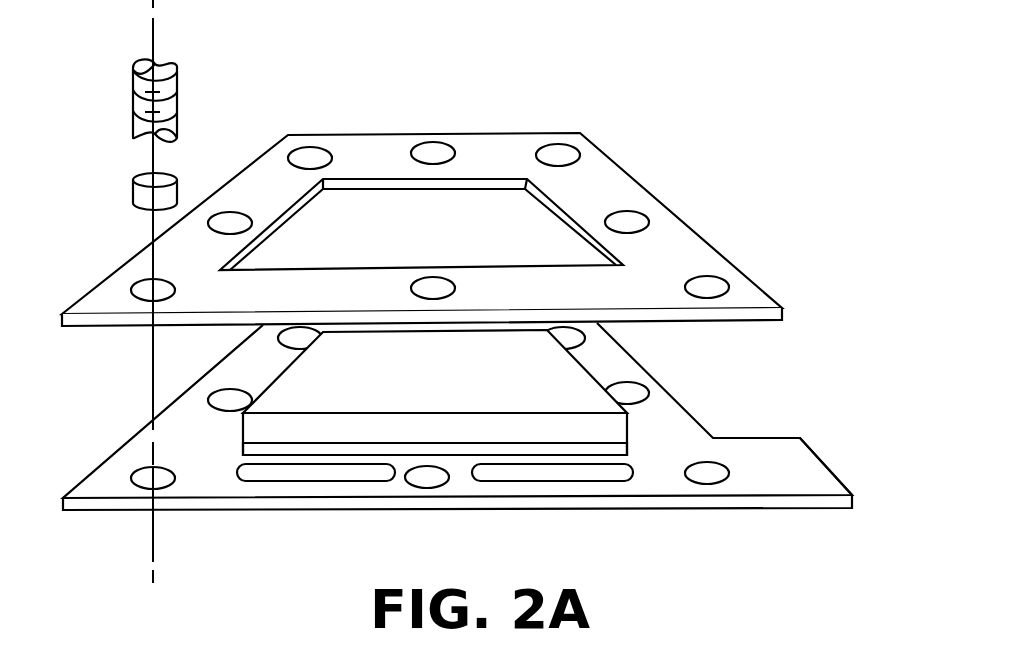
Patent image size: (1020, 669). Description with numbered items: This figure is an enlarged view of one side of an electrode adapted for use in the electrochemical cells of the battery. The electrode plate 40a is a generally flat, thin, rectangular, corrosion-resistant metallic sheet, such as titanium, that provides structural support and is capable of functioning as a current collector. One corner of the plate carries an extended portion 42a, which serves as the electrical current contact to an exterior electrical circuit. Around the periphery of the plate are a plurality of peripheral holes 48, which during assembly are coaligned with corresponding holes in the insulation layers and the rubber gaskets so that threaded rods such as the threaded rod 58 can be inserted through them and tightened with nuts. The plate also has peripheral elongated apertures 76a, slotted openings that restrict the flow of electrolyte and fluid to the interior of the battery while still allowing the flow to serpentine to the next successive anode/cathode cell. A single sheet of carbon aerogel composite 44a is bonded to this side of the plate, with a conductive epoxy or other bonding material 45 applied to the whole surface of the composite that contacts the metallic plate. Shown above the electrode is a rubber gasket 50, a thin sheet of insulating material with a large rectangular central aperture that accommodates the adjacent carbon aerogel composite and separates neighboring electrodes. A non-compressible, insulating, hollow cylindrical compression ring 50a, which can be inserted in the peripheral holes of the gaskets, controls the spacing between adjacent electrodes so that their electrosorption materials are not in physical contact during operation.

The electrode plate 40a is at (678, 440).
The extended portion 42a is at (803, 470).
The carbon aerogel composite 44a is at (462, 392).
The bonding material 45 is at (368, 444).
The peripheral holes 48 is at (142, 477).
The rubber gasket 50 is at (620, 197).
The compression ring 50a is at (133, 195).
The threaded rod 58 is at (133, 106).
The peripheral elongated apertures 76a is at (300, 483).